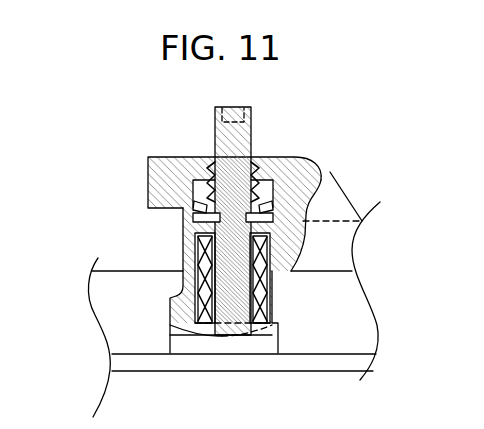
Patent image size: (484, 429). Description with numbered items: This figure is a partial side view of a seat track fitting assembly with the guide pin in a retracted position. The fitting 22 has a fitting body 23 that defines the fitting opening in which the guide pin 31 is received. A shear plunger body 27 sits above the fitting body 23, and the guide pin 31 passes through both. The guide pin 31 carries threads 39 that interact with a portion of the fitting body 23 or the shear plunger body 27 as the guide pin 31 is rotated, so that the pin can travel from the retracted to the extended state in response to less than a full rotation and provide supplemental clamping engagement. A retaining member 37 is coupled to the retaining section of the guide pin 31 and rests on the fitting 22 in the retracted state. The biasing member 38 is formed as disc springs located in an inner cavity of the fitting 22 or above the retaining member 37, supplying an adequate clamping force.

The fitting 22 is at (305, 232).
The fitting body 23 is at (185, 249).
The shear plunger body 27 is at (186, 170).
The guide pin 31 is at (246, 138).
The retaining member 37 is at (205, 217).
The biasing member 38 is at (193, 208).
The threads 39 is at (258, 178).